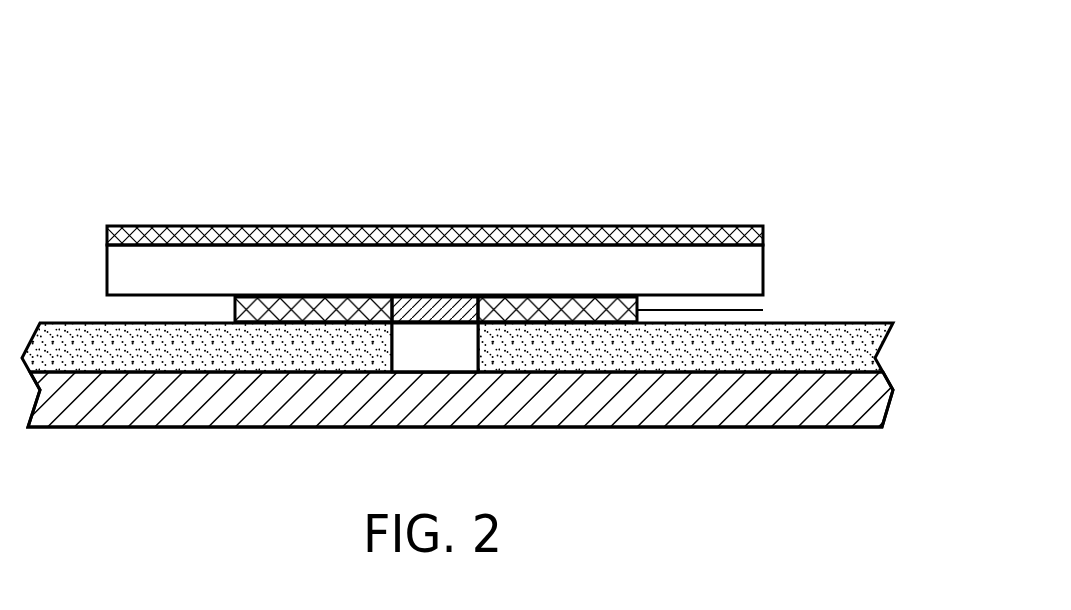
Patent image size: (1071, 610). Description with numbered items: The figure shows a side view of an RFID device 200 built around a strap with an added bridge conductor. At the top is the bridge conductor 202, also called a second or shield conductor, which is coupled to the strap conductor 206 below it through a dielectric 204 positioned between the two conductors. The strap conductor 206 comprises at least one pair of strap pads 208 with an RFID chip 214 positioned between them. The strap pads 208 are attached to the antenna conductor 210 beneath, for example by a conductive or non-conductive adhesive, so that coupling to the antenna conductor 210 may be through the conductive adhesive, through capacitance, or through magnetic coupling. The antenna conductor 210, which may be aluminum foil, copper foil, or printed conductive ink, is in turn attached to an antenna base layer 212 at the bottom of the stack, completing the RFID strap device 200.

The RFID device 200 is at (619, 107).
The bridge conductor 202 is at (735, 225).
The dielectric 204 is at (752, 263).
The strap conductor 206 is at (637, 307).
The strap pads 208 is at (233, 320).
The antenna conductor 210 is at (882, 346).
The antenna base layer 212 is at (268, 427).
The RFID chip 214 is at (438, 323).